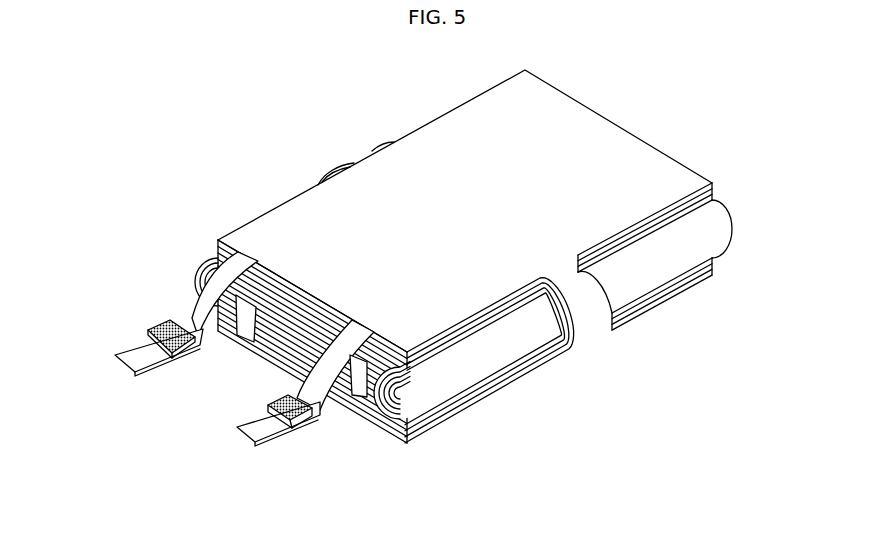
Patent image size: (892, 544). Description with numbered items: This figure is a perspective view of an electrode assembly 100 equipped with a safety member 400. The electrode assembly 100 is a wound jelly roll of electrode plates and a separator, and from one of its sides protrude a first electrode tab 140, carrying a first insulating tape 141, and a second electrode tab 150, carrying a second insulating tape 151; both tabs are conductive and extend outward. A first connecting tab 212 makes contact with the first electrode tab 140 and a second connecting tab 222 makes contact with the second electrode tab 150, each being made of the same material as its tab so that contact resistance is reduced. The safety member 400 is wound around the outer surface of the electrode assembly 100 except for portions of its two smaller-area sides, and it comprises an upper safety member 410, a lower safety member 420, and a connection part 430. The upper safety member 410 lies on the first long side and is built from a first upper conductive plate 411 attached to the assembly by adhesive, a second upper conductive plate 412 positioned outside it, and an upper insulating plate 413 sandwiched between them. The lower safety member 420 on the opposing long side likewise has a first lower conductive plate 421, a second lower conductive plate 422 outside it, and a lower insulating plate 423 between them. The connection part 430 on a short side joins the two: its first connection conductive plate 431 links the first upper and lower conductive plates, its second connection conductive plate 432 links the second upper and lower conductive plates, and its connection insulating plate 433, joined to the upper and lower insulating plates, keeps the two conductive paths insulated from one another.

The electrode assembly 100 is at (735, 227).
The first electrode tab 140 is at (263, 439).
The first insulating tape 141 is at (305, 428).
The second electrode tab 150 is at (125, 353).
The second insulating tape 151 is at (153, 327).
The first connecting tab 212 is at (320, 407).
The second connecting tab 222 is at (183, 325).
The safety member 400 is at (227, 205).
The upper safety member 410 is at (687, 194).
The first upper conductive plate 411 is at (714, 199).
The second upper conductive plate 412 is at (711, 186).
The upper insulating plate 413 is at (690, 195).
The lower safety member 420 is at (707, 302).
The first lower conductive plate 421 is at (657, 291).
The second lower conductive plate 422 is at (708, 277).
The lower insulating plate 423 is at (681, 281).
The connection part 430 is at (481, 268).
The first connection conductive plate 431 is at (556, 358).
The second connection conductive plate 432 is at (563, 333).
The connection insulating plate 433 is at (566, 352).